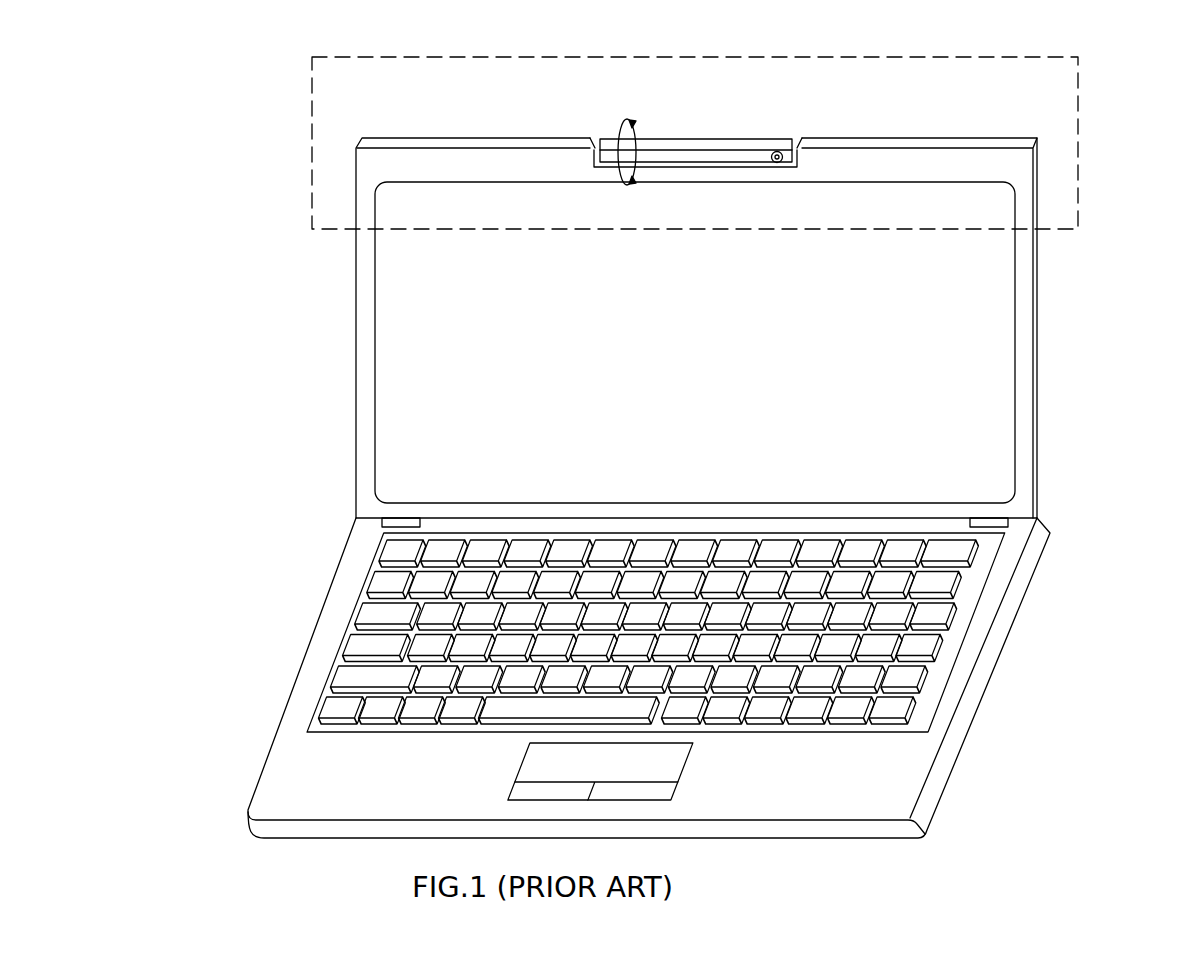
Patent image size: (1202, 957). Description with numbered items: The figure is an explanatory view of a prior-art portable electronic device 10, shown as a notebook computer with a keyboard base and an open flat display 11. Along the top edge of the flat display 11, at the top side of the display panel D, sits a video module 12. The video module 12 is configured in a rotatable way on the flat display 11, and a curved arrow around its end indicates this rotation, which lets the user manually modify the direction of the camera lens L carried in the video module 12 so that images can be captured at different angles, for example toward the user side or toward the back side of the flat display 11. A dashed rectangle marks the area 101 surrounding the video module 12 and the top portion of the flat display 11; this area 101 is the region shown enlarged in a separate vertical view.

The portable electronic device 10 is at (222, 96).
The flat display 11 is at (955, 140).
The video module 12 is at (683, 142).
The camera lens L is at (778, 152).
The display panel D is at (407, 333).
The area 101 is at (1079, 88).